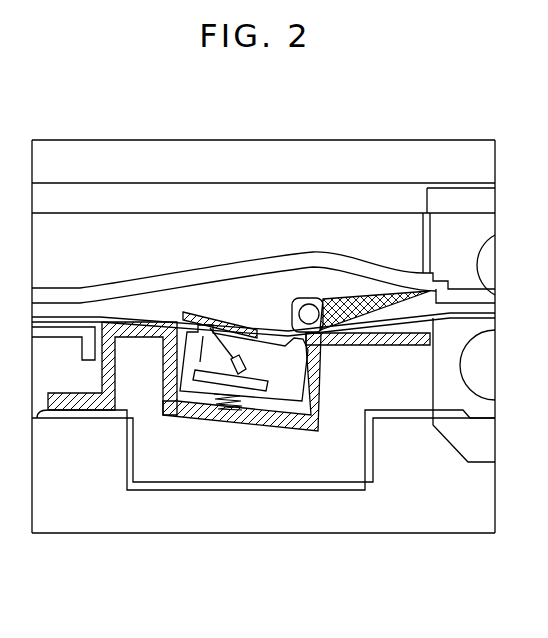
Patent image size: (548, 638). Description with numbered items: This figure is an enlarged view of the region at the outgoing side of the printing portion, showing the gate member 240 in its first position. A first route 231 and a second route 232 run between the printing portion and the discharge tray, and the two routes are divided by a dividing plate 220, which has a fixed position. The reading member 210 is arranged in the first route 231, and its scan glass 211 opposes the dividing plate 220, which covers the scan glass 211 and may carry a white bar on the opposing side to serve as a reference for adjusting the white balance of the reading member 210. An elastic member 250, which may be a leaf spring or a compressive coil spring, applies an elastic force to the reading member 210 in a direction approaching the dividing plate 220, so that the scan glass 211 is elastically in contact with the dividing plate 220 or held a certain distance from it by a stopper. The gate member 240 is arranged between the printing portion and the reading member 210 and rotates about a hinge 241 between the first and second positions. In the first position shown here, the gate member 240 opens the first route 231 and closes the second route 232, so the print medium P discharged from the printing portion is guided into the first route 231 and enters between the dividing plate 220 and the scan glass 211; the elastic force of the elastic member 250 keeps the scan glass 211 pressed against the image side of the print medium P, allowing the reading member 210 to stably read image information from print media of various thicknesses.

The print medium P is at (140, 320).
The reading member 210 is at (287, 393).
The scan glass 211 is at (240, 337).
The dividing plate 220 is at (226, 320).
The first route 231 is at (390, 332).
The second route 232 is at (280, 285).
The gate member 240 is at (355, 302).
The hinge 241 is at (309, 304).
The elastic member 250 is at (220, 403).